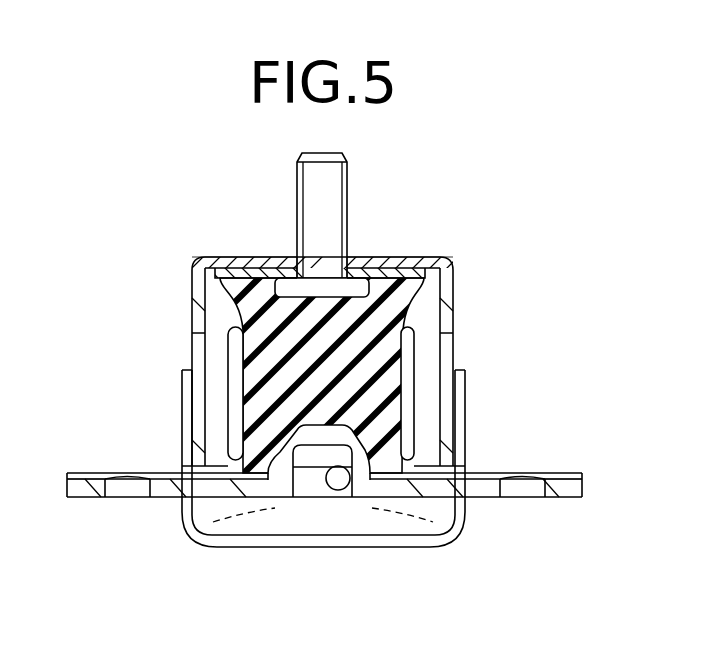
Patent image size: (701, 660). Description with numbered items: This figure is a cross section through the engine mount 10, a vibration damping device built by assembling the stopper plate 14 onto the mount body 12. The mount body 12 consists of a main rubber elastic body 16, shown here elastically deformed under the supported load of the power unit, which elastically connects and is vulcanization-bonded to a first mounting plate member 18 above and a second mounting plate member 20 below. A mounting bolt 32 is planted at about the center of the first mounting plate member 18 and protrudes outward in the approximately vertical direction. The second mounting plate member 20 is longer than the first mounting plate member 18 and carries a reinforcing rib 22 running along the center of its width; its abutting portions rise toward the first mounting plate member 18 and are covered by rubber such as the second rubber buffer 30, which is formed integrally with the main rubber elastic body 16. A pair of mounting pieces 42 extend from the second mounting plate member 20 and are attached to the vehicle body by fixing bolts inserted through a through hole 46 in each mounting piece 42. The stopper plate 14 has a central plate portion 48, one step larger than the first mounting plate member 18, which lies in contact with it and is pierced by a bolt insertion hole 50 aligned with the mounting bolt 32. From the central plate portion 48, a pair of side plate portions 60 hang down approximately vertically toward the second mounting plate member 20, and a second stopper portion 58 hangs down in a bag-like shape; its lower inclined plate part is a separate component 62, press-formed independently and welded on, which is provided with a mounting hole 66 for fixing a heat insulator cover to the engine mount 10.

The engine mount 10 is at (511, 196).
The mount body 12 is at (352, 497).
The stopper plate 14 is at (313, 315).
The main rubber elastic body 16 is at (265, 380).
The first mounting plate member 18 is at (384, 258).
The second mounting plate member 20 is at (330, 509).
The reinforcing rib 22 is at (313, 426).
The second rubber buffer 30 is at (408, 372).
The mounting bolt 32 is at (333, 207).
The mounting piece 42 is at (90, 495).
The through hole 46 is at (148, 488).
The central plate portion 48 is at (270, 260).
The bolt insertion hole 50 is at (303, 257).
The second stopper portion 58 is at (449, 392).
The side plate portion 60 is at (198, 311).
The separate component 62 is at (242, 548).
The mounting hole 66 is at (345, 483).